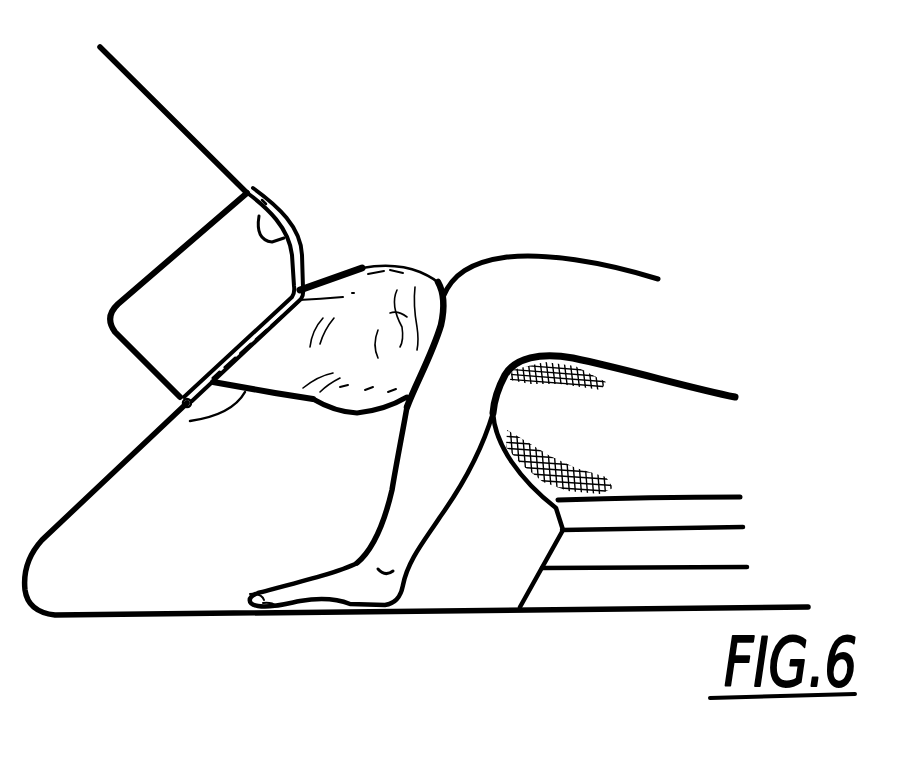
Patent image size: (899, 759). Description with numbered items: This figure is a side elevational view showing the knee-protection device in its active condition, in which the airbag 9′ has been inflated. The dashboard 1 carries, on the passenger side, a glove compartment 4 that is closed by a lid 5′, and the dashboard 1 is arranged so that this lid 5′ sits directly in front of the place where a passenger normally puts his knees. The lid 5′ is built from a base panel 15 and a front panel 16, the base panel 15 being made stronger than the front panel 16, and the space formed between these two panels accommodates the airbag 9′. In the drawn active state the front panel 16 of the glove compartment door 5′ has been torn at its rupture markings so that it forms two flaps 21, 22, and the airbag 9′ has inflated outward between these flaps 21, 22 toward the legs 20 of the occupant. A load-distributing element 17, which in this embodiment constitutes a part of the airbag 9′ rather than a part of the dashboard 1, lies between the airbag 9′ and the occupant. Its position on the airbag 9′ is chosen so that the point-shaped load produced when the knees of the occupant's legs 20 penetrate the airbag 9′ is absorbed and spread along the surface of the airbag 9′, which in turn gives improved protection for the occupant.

The dashboard 1 is at (180, 143).
The glove compartment 4 is at (153, 303).
The lid 5′ is at (259, 198).
The base panel 15 is at (272, 208).
The front panel 16 is at (303, 237).
The flap 21 is at (355, 267).
The airbag 9′ is at (427, 275).
The legs 20 is at (488, 290).
The flap 22 is at (183, 422).
The load-distributing element 17 is at (412, 400).